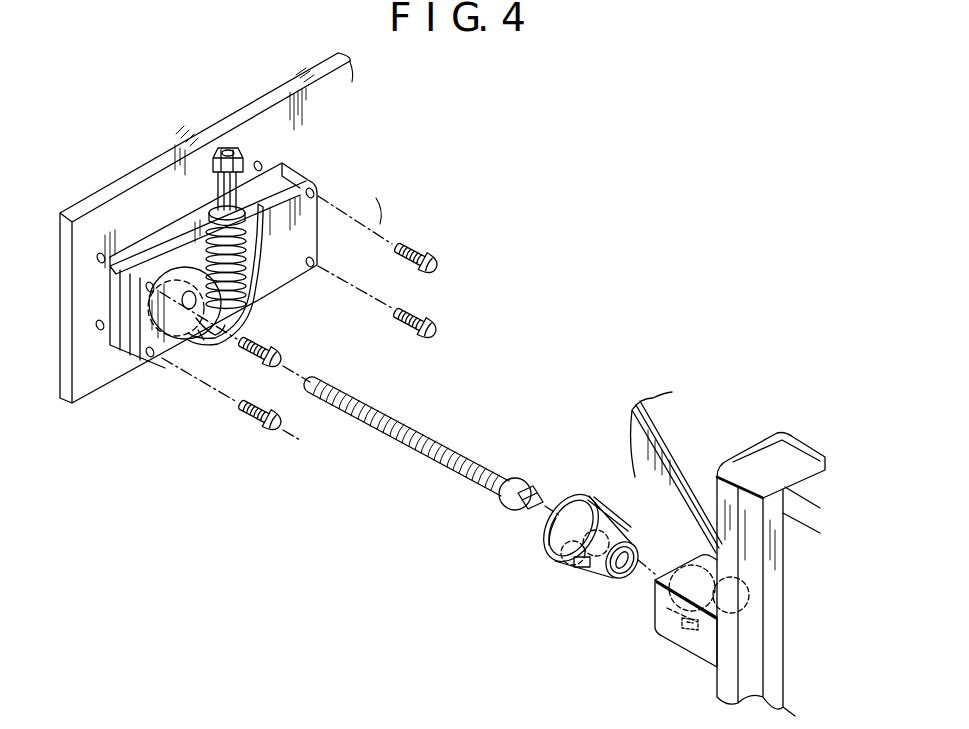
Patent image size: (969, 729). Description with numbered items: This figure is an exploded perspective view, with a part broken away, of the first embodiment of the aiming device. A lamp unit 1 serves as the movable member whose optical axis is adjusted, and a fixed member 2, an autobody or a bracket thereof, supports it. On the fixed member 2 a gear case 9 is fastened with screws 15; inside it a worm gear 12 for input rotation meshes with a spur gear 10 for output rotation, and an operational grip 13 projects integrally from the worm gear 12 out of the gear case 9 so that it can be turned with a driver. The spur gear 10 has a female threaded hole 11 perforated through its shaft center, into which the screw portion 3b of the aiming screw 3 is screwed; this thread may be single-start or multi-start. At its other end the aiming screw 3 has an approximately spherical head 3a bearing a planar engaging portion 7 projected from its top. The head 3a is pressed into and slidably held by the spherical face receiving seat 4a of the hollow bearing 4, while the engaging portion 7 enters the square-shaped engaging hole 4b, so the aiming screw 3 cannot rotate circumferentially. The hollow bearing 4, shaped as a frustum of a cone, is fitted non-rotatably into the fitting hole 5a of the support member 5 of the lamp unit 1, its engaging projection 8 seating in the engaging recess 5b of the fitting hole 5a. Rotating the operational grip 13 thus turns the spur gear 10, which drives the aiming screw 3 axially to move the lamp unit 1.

The lamp unit 1 is at (748, 446).
The fixed member 2 is at (255, 106).
The aiming screw 3 is at (433, 440).
The head 3a is at (519, 481).
The screw portion 3b is at (390, 412).
The hollow bearing 4 is at (581, 531).
The spherical face receiving seat 4a is at (548, 553).
The square-shaped engaging hole 4b is at (613, 580).
The support member 5 is at (680, 598).
The fitting hole 5a is at (653, 612).
The engaging recess 5b is at (680, 645).
The engaging portion 7 is at (540, 496).
The engaging projection 8 is at (577, 572).
The gear case 9 is at (173, 232).
The spur gear 10 is at (168, 276).
The female threaded hole 11 is at (197, 337).
The worm gear 12 is at (259, 265).
The operational grip 13 is at (218, 147).
The screws 15 is at (421, 314).